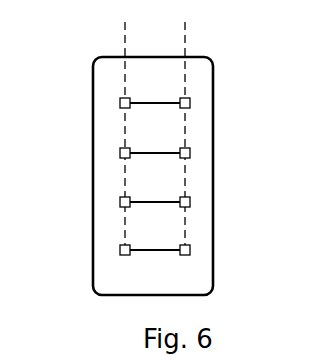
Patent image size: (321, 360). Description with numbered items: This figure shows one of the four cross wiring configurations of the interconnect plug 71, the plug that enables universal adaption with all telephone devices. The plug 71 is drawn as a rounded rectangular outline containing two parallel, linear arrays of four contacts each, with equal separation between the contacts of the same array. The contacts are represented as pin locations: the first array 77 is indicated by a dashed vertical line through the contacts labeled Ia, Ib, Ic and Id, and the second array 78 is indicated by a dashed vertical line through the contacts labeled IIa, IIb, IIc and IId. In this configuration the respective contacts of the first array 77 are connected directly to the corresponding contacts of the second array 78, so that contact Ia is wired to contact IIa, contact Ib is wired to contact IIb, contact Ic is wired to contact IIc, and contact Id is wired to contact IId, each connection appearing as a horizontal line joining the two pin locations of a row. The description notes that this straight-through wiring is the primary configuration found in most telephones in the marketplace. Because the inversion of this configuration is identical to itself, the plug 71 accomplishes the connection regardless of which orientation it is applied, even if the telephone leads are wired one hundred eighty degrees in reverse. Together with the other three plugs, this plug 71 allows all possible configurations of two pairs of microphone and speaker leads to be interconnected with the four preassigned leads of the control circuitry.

The plug 71 is at (215, 70).
The first array 77 is at (125, 124).
The array 78 is at (185, 124).
The contact Ia is at (120, 101).
The contact Ib is at (120, 151).
The contact Ic is at (120, 201).
The contact Id is at (120, 249).
The contact IIa is at (190, 102).
The contact IIb is at (190, 154).
The contact IIc is at (190, 203).
The contact IId is at (190, 251).